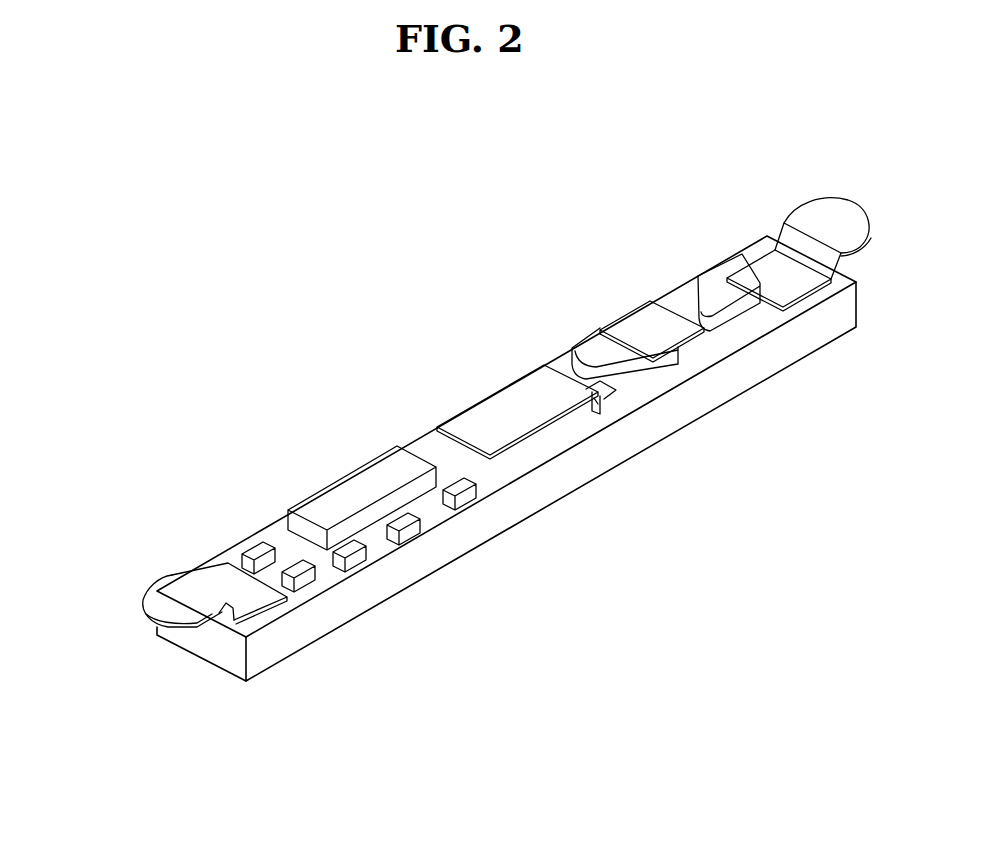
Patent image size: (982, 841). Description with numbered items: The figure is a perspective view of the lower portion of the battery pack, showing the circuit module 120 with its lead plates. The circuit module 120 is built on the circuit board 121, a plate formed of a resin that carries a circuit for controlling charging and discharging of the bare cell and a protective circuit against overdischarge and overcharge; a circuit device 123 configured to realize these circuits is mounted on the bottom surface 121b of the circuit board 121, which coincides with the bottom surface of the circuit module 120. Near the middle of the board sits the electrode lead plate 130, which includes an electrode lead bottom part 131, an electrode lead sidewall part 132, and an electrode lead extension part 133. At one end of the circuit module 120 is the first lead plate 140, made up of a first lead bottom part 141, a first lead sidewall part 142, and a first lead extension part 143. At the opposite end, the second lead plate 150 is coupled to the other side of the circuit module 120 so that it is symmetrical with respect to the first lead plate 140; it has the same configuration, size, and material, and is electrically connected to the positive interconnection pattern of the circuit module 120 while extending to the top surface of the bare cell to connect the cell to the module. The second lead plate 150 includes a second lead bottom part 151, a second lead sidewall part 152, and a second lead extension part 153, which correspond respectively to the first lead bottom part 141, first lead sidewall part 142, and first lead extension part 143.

The circuit module 120 is at (147, 422).
The circuit board 121 is at (833, 325).
The bottom surface of the circuit board 121b is at (560, 365).
The circuit device 123 is at (263, 550).
The electrode lead plate 130 is at (461, 406).
The electrode lead bottom part 131 is at (605, 388).
The electrode lead sidewall part 132 is at (590, 411).
The electrode lead extension part 133 is at (513, 427).
The first lead plate 140 is at (860, 194).
The first lead bottom part 141 is at (752, 268).
The first lead sidewall part 142 is at (778, 237).
The first lead extension part 143 is at (812, 214).
The second lead plate 150 is at (137, 602).
The second lead bottom part 151 is at (220, 575).
The second lead sidewall part 152 is at (222, 625).
The second lead extension part 153 is at (155, 615).